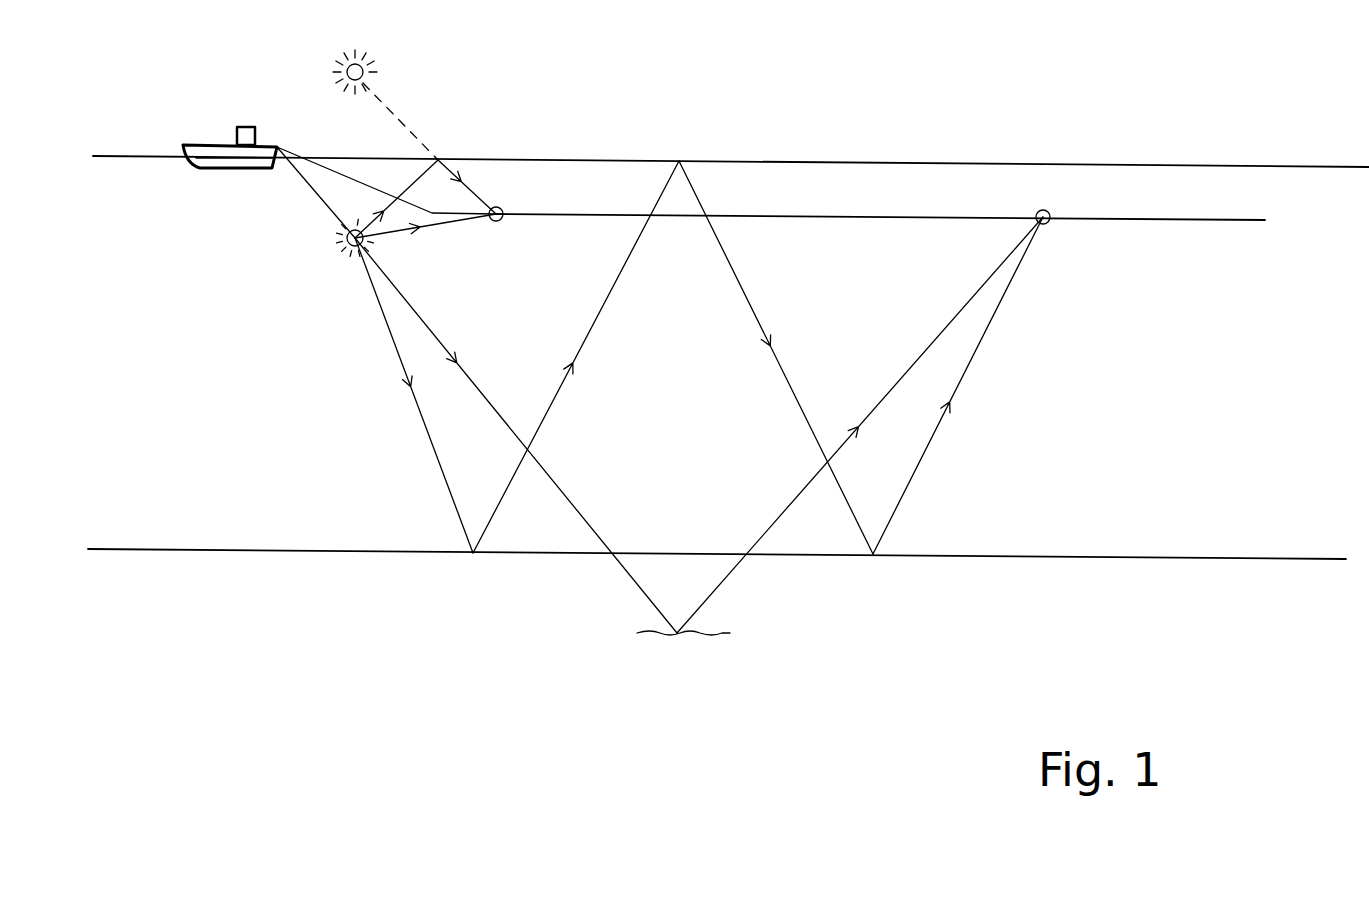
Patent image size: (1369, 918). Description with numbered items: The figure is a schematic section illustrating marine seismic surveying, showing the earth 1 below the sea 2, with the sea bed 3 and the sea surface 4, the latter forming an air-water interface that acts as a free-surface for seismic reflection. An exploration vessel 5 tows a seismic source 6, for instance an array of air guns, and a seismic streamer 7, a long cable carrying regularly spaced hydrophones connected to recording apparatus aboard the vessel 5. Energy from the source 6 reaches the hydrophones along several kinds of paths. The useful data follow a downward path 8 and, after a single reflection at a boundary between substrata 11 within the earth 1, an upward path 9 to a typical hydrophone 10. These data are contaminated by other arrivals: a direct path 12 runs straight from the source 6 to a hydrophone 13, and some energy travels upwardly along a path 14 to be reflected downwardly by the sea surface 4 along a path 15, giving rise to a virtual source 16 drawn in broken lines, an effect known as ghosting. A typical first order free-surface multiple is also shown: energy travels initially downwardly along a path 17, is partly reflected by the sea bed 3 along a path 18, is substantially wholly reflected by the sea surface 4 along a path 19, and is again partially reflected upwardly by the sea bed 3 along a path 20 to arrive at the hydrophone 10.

The earth 1 is at (1004, 632).
The sea 2 is at (1160, 394).
The sea bed 3 is at (1268, 558).
The sea surface 4 is at (1283, 166).
The exploration vessel 5 is at (213, 143).
The seismic source 6 is at (341, 249).
The seismic streamer 7 is at (1193, 220).
The downward path 8 is at (571, 500).
The upward path 9 is at (790, 505).
The hydrophone 10 is at (1049, 224).
The boundary between substrata 11 is at (730, 633).
The direct path 12 is at (450, 228).
The hydrophone 13 is at (503, 211).
The upward path 14 is at (409, 187).
The downward reflected path 15 is at (478, 196).
The virtual source 16 is at (365, 67).
The initial downward path 17 is at (430, 447).
The sea-bed reflected path 18 is at (601, 310).
The surface reflected path 19 is at (760, 325).
The second sea-bed reflected path 20 is at (941, 425).